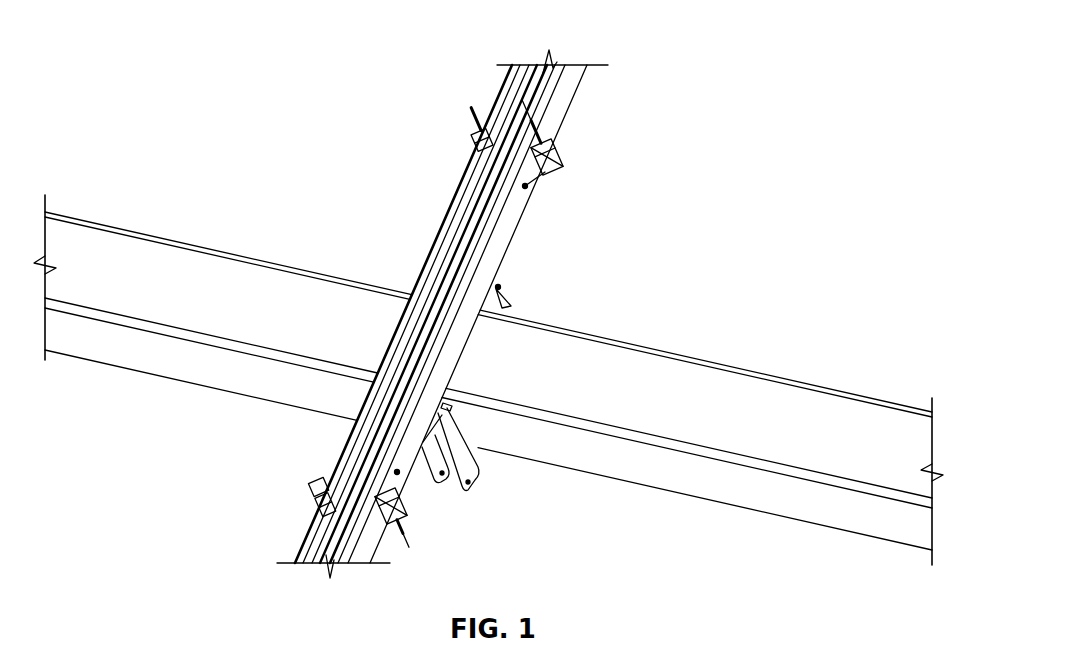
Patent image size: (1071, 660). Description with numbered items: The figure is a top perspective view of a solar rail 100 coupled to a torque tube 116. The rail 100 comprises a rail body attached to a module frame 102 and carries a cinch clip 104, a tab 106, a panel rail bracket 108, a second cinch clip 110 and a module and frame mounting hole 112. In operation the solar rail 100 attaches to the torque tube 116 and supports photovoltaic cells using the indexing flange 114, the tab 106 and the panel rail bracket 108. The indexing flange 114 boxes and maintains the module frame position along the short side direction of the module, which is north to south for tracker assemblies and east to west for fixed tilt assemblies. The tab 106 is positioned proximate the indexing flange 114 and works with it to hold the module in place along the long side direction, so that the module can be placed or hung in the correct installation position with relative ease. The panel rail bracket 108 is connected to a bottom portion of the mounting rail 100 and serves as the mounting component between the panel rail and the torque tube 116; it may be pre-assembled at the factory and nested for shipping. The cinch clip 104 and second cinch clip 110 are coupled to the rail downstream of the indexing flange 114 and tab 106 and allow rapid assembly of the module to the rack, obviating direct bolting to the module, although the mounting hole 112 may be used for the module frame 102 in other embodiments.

The solar rail 100 is at (635, 51).
The module frame 102 is at (574, 81).
The cinch clip 104 is at (557, 157).
The tab 106 is at (530, 187).
The panel rail bracket 108 is at (503, 304).
The second cinch clip 110 is at (402, 498).
The module frame mounting hole 112 is at (394, 470).
The indexing flange 114 is at (433, 232).
The torque tube 116 is at (733, 383).